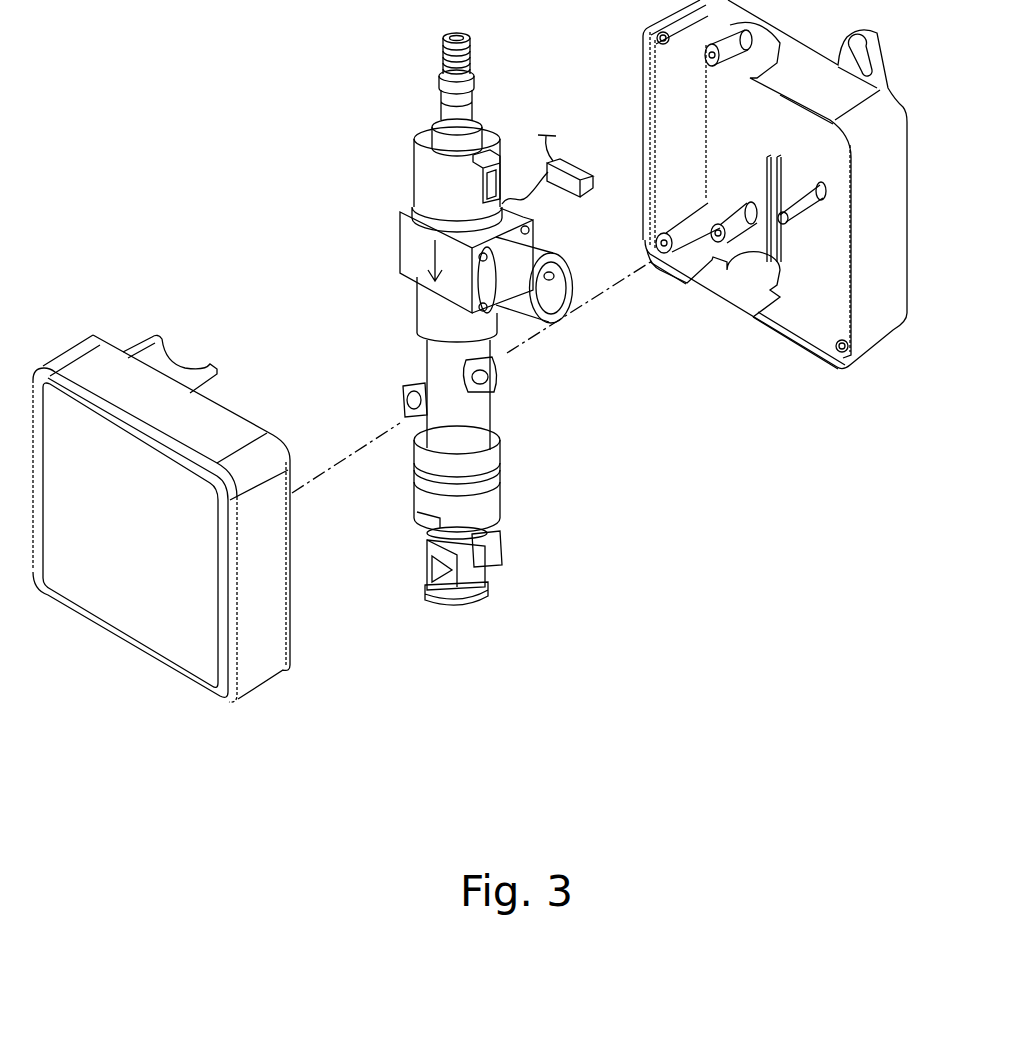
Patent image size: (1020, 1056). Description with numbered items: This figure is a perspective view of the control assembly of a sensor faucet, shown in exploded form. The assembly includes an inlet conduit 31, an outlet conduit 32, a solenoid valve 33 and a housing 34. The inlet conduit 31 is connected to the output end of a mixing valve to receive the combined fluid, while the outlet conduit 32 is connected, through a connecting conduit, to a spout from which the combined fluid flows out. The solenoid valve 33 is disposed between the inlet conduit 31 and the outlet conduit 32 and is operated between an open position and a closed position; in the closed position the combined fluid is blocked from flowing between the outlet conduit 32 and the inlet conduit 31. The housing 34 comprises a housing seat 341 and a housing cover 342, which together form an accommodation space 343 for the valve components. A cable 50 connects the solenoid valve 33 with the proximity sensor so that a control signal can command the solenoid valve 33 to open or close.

The inlet conduit 31 is at (444, 116).
The outlet conduit 32 is at (470, 577).
The solenoid valve 33 is at (398, 245).
The housing 34 is at (233, 713).
The housing seat 341 is at (873, 325).
The housing cover 342 is at (98, 602).
The accommodation space 343 is at (797, 323).
The cable 50 is at (580, 166).